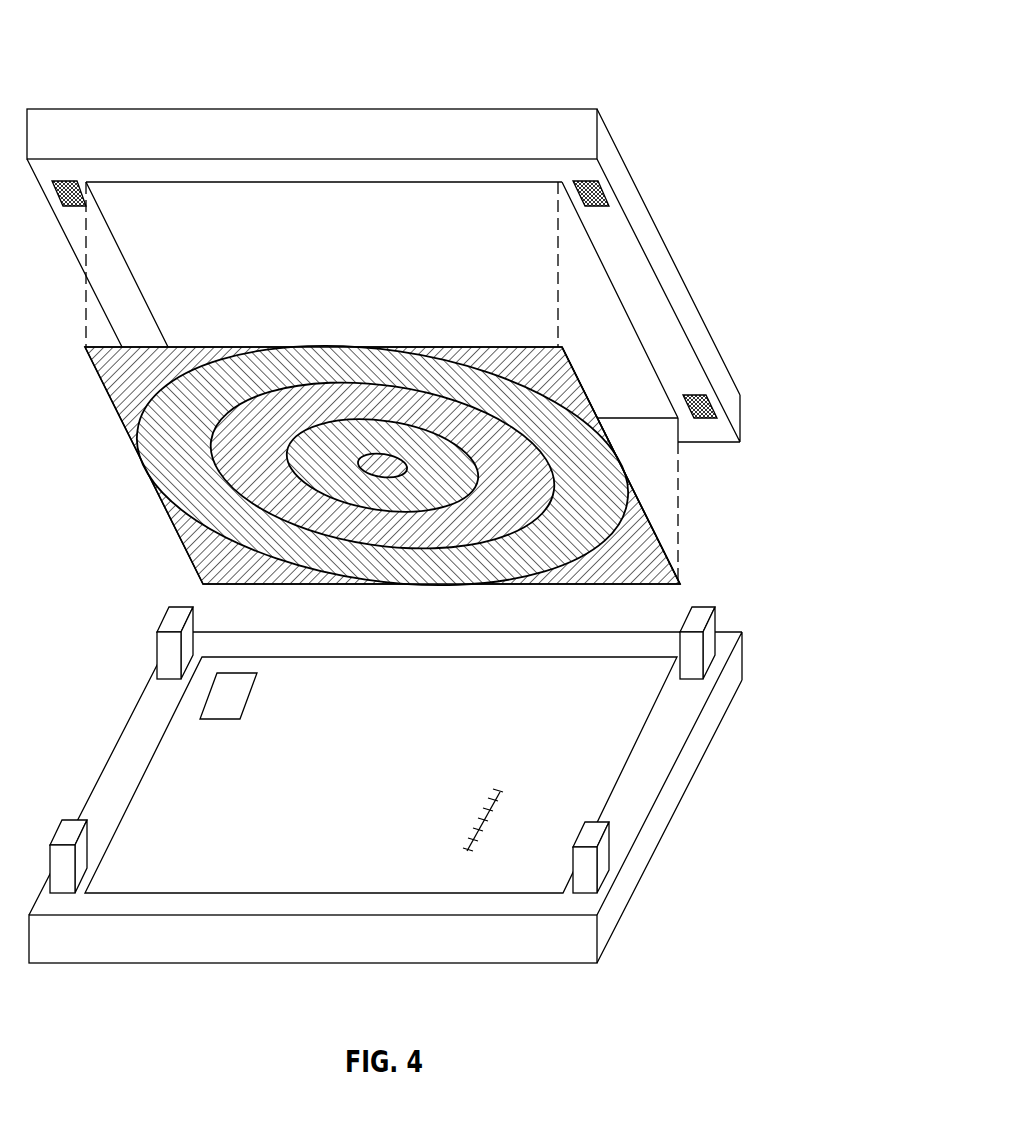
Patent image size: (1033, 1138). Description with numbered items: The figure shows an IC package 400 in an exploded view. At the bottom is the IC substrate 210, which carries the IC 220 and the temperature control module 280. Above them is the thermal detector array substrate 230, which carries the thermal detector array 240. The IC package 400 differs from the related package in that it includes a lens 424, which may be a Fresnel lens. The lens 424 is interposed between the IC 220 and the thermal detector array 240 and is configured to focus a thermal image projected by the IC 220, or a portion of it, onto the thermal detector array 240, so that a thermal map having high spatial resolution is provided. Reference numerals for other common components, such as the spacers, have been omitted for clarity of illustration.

The IC package 400 is at (648, 64).
The thermal detector array substrate 230 is at (683, 288).
The thermal detector array 240 is at (394, 310).
The lens 424 is at (652, 525).
The IC substrate 210 is at (387, 785).
The IC 220 is at (399, 782).
The temperature control module 280 is at (247, 713).